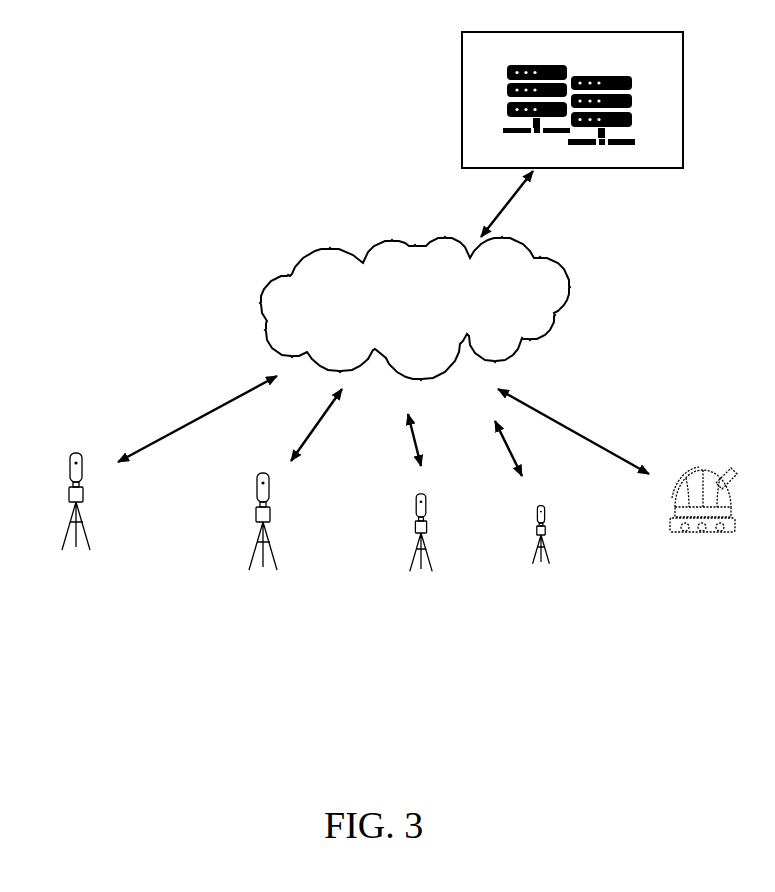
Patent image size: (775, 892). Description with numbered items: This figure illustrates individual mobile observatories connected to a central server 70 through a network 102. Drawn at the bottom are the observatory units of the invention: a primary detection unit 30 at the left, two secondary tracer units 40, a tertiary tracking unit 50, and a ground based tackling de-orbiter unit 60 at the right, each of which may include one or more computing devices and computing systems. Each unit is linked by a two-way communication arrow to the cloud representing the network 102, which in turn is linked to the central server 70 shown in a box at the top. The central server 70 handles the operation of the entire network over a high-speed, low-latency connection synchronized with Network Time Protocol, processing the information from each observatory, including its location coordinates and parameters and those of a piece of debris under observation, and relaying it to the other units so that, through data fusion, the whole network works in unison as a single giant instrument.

The central server 70 is at (632, 120).
The network 102 is at (415, 308).
The primary detection unit 30 is at (75, 560).
The secondary tracer unit 40 is at (270, 530).
The tertiary tracking unit 50 is at (530, 563).
The ground based tackling de-orbiter unit 60 is at (705, 533).